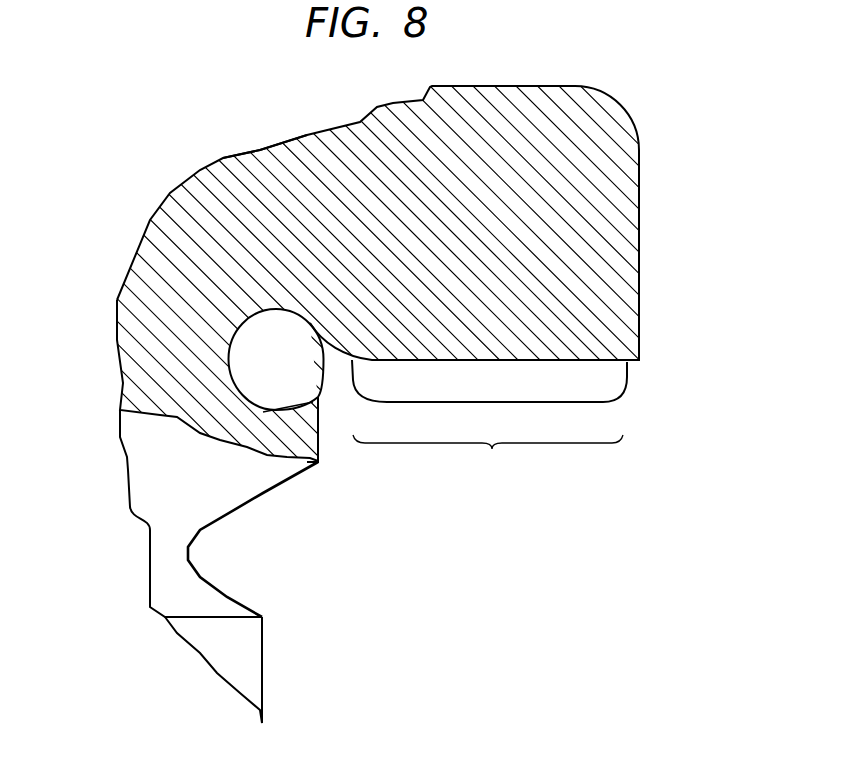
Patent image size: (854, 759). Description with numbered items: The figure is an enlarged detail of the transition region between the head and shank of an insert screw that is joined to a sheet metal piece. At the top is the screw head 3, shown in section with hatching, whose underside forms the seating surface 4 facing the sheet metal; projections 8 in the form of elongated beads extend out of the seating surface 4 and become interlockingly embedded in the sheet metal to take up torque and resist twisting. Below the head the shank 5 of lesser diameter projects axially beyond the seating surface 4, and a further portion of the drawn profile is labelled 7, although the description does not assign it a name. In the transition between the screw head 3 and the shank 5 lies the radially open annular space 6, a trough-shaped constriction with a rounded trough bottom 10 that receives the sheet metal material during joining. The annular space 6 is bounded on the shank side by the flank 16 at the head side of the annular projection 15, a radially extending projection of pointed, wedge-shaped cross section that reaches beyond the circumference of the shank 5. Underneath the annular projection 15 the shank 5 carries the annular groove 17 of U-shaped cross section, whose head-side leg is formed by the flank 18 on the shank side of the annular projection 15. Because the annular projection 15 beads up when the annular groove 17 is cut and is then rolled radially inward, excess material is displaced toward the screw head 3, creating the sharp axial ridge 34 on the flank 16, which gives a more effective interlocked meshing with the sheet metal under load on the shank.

The screw head 3 is at (617, 160).
The seating surface 4 is at (488, 461).
The shank 5 is at (265, 723).
The annular space 6 is at (262, 178).
The flange 7 is at (622, 425).
The projections 8 is at (603, 343).
The trough bottom 10 is at (263, 322).
The annular projection 15 is at (320, 447).
The flank at the head side 16 is at (245, 392).
The annular groove 17 is at (218, 562).
The flank on the shank side 18 is at (263, 493).
The axial ridge 34 is at (318, 393).